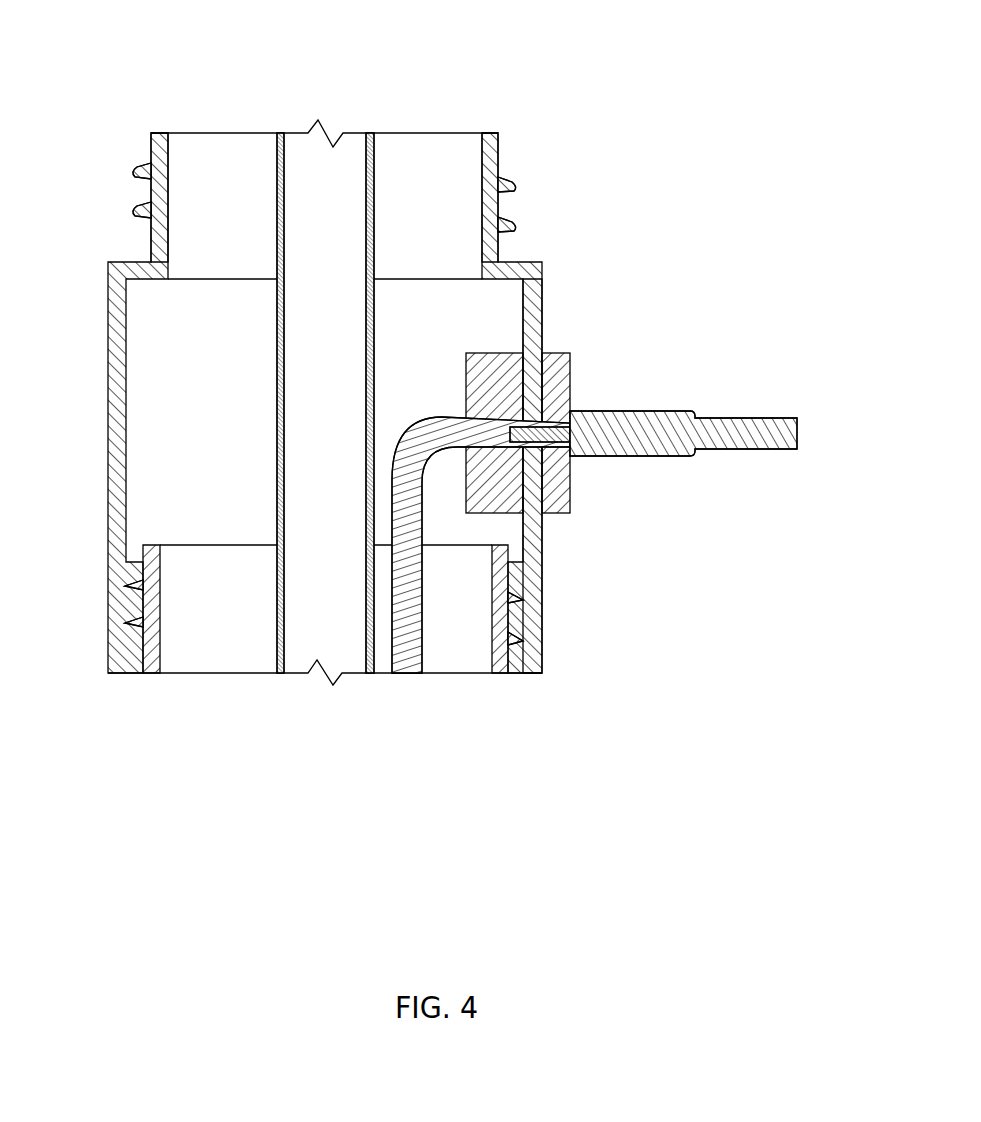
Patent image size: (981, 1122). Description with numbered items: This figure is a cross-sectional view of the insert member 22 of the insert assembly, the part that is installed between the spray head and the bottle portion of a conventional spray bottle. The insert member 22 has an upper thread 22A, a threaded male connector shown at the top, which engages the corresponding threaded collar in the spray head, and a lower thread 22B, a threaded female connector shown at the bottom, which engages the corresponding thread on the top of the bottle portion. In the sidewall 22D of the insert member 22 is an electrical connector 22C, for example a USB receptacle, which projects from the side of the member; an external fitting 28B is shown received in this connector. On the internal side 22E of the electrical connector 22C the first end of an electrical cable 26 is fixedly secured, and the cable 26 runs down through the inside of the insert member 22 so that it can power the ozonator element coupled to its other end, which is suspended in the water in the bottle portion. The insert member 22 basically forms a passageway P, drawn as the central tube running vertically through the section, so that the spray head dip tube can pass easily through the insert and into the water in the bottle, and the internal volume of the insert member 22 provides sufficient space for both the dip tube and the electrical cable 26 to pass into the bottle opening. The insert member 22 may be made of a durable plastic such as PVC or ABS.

The insert member 22 is at (353, 352).
The upper thread 22A is at (503, 181).
The lower thread 22B is at (497, 623).
The electrical connector 22C is at (557, 365).
The sidewall 22D is at (533, 290).
The internal side 22E is at (463, 367).
The electrical cable 26 is at (413, 642).
The sensor probe / fitting 28B is at (670, 418).
The passageway P is at (347, 150).